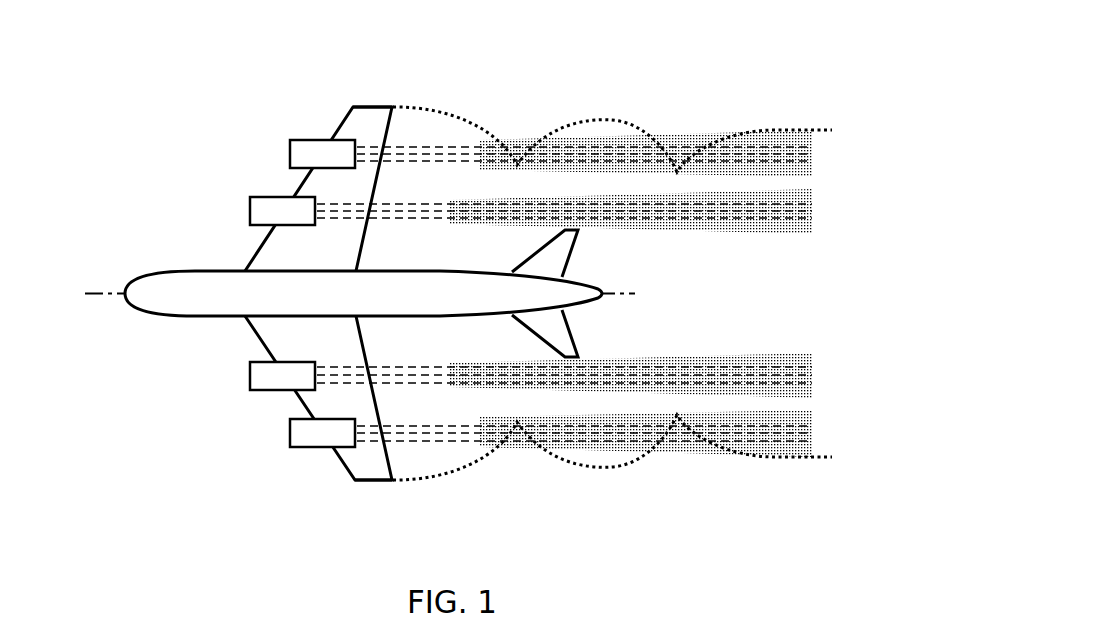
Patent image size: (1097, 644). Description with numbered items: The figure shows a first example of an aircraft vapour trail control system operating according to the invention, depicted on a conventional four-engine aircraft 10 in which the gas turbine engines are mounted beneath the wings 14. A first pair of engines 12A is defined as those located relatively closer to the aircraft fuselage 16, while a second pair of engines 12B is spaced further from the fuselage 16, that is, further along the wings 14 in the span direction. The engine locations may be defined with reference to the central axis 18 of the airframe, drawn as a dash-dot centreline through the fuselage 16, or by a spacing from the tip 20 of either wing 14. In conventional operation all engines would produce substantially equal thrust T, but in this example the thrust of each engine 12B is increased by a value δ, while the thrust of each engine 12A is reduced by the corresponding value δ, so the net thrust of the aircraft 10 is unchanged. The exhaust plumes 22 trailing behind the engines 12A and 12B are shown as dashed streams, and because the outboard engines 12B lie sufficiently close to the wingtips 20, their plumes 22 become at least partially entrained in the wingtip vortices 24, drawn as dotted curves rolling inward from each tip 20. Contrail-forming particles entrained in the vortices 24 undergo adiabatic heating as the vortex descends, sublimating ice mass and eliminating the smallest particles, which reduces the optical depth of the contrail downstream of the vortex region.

The aircraft 10 is at (129, 97).
The first pair of engines 12A is at (250, 211).
The second pair of engines 12B is at (290, 151).
The wings 14 is at (250, 264).
The aircraft fuselage 16 is at (188, 318).
The central axis 18 is at (105, 291).
The wing tip 20 is at (378, 105).
The exhaust plumes 22 is at (455, 152).
The wingtip vortices 24 is at (423, 106).